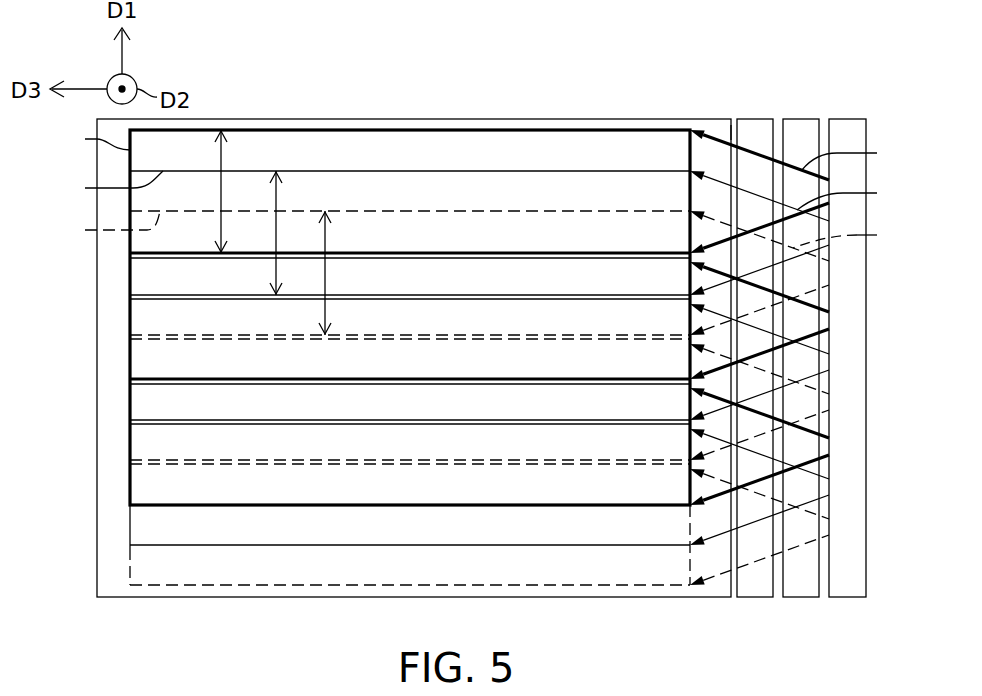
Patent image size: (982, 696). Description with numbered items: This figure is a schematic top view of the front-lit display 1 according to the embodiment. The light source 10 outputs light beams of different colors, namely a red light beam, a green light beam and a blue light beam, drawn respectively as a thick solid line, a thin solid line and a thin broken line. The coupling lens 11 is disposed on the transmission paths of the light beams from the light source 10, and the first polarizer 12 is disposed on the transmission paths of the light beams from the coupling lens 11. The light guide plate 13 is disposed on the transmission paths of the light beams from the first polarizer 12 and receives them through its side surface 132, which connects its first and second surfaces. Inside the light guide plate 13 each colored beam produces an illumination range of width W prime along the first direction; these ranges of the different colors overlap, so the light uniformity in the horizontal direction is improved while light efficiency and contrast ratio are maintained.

The front-lit display 1 is at (58, 632).
The light source 10 is at (845, 597).
The coupling lens 11 is at (799, 597).
The first polarizer 12 is at (752, 597).
The light guide plate 13 is at (695, 597).
The side surface 132 is at (734, 129).